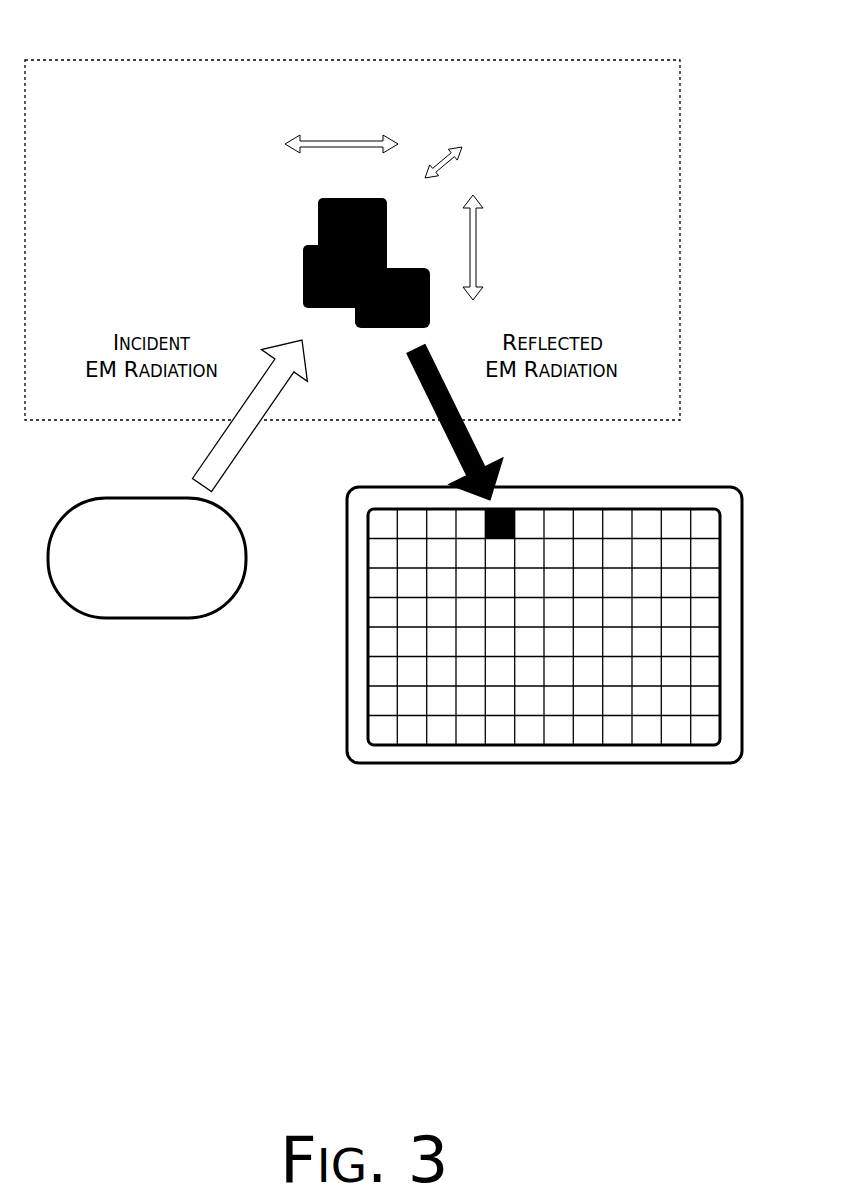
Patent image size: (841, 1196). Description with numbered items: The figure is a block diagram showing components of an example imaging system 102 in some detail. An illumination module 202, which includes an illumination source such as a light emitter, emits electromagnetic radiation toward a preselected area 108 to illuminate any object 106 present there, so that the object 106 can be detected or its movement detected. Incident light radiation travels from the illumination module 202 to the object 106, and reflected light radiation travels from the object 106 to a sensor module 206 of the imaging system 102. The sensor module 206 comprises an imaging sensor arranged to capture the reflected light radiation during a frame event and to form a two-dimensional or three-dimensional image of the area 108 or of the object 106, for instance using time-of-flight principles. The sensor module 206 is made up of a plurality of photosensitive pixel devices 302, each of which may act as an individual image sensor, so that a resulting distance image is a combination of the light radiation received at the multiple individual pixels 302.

The imaging system 102 is at (714, 320).
The object 106 is at (318, 220).
The preselected area 108 is at (602, 60).
The illumination module 202 is at (163, 596).
The sensor module 206 is at (643, 487).
The photosensitive pixel device 302 is at (509, 509).